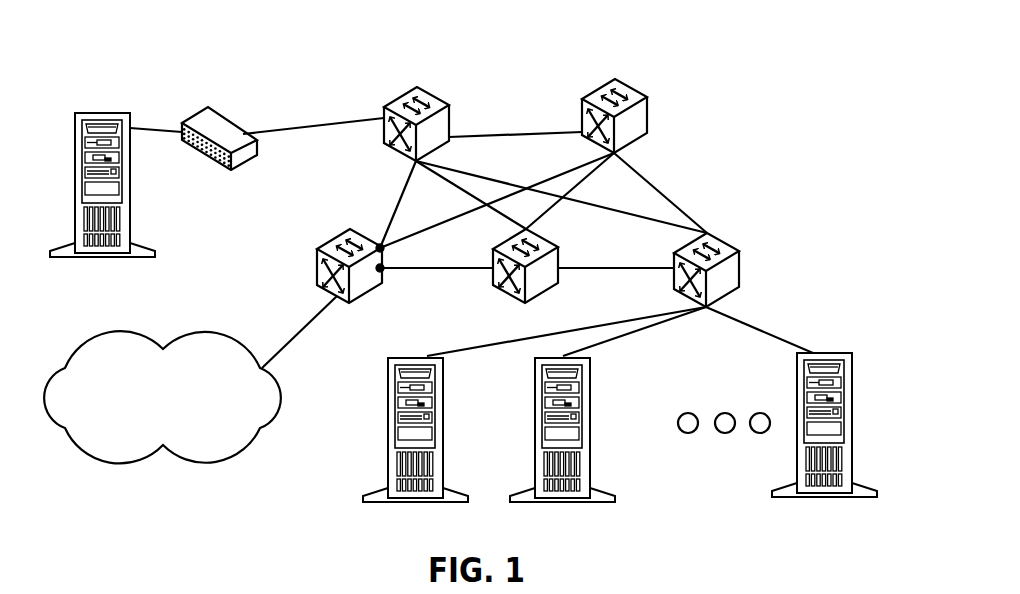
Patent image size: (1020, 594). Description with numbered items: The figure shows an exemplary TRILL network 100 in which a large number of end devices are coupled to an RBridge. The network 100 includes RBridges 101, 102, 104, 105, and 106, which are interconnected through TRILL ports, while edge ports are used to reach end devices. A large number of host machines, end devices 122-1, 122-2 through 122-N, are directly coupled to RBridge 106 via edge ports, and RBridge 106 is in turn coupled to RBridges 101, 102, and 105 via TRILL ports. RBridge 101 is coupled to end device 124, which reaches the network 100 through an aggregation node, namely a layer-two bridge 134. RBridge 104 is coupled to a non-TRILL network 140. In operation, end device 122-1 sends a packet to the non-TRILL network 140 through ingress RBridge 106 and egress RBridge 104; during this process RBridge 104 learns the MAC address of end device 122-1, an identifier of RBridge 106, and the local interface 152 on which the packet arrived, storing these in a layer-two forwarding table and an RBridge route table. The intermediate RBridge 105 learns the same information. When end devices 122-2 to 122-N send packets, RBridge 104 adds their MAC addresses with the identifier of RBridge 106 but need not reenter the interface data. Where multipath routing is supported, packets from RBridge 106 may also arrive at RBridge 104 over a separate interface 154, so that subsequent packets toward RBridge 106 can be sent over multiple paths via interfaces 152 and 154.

The TRILL network 100 is at (667, 90).
The RBridge 101 is at (393, 150).
The RBridge 102 is at (588, 142).
The RBridge 104 is at (327, 298).
The RBridge 105 is at (495, 283).
The RBridge 106 is at (675, 273).
The end device 122-1 is at (442, 395).
The end device 122-2 is at (590, 395).
The end device 122-N is at (852, 390).
The end device 124 is at (131, 152).
The layer-2 bridge 134 is at (210, 120).
The non-TRILL network 140 is at (162, 397).
The local interface 152 is at (380, 268).
The separate interface 154 is at (380, 248).